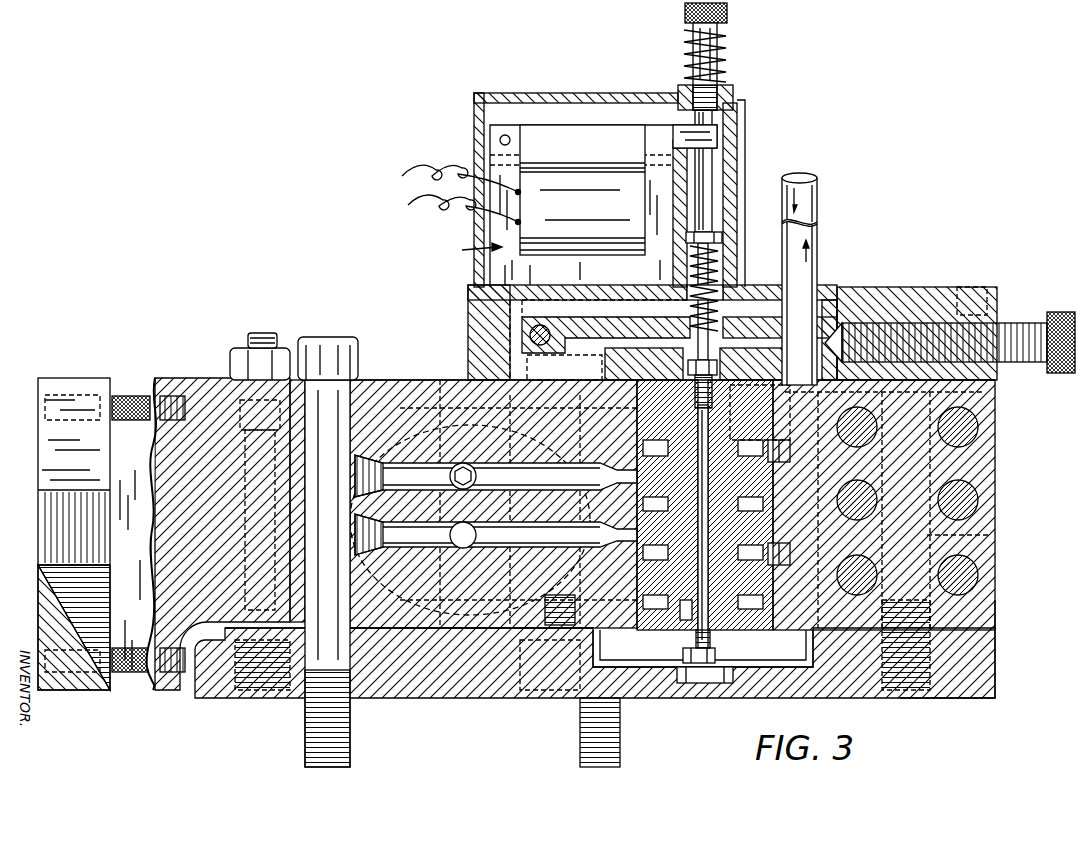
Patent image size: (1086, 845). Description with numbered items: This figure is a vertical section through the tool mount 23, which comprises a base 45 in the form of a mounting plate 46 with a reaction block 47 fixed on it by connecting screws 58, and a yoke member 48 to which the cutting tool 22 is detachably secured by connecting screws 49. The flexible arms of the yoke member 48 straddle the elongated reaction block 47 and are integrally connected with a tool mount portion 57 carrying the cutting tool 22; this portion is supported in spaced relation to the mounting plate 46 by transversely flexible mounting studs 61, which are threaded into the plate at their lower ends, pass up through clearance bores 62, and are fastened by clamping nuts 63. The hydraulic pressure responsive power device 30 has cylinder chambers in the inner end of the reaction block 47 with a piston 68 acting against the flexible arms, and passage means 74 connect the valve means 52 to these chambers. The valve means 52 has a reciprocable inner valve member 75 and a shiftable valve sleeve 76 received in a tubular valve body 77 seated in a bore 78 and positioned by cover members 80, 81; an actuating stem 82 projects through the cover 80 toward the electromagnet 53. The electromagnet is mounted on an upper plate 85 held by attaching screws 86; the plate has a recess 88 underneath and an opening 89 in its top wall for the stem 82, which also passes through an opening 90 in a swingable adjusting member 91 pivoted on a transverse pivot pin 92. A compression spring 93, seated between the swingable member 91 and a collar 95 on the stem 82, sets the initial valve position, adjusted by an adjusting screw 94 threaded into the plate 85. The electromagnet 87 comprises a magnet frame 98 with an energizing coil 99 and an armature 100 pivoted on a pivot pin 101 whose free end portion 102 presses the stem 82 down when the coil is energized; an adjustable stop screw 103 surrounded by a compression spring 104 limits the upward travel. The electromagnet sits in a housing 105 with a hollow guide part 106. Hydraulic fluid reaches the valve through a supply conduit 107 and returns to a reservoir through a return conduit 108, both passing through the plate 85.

The cutting tool 22 is at (38, 512).
The tool mount 23 is at (992, 611).
The hydraulic pressure responsive power device 30 is at (398, 430).
The base 45 is at (450, 700).
The mounting plate 46 is at (660, 700).
The reaction block 47 is at (985, 470).
The yoke member 48 is at (409, 659).
The connecting screws 49 is at (88, 392).
The valve means 52 is at (760, 406).
The signal-responsive electromagnet 53 is at (463, 248).
The tool mount portion 57 is at (180, 380).
The connecting screws 58 is at (995, 536).
The mounting stud 61 is at (245, 505).
The clearance bores 62 is at (245, 472).
The clamping nuts 63 is at (230, 362).
The piston 68 is at (442, 400).
The passage means 74 is at (535, 520).
The inner valve member 75 is at (715, 585).
The valve sleeve 76 is at (642, 580).
The tubular valve body 77 is at (760, 432).
The bore 78 is at (650, 440).
The cover member 80 is at (612, 378).
The cover member 81 is at (762, 675).
The actuating stem 82 is at (760, 364).
The upper plate 85 is at (880, 292).
The attaching screws 86 is at (975, 288).
The electromagnet 87 is at (500, 270).
The recess 88 is at (545, 315).
The opening 89 is at (722, 292).
The opening 90 is at (694, 372).
The swingable adjusting member 91 is at (830, 320).
The transverse pivot pin 92 is at (536, 346).
The compression spring 93 is at (688, 265).
The adjusting screw 94 is at (1012, 323).
The collar 95 is at (722, 235).
The magnet frame 98 is at (583, 265).
The energizing coil 99 is at (560, 172).
The armature 100 is at (627, 130).
The pivot pin 101 is at (500, 140).
The free end portion 102 is at (718, 130).
The adjustable stop screw 103 is at (722, 60).
The compression spring 104 is at (728, 76).
The housing 105 is at (538, 96).
The hollow guide part 106 is at (713, 150).
The supply conduit 107 is at (816, 197).
The return conduit 108 is at (812, 240).